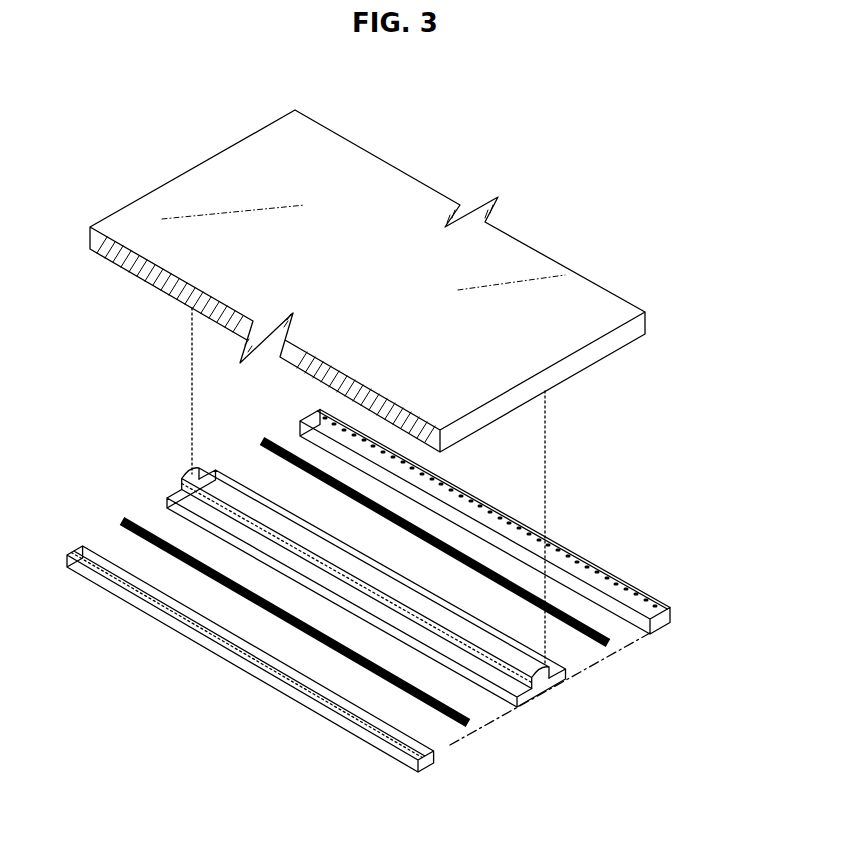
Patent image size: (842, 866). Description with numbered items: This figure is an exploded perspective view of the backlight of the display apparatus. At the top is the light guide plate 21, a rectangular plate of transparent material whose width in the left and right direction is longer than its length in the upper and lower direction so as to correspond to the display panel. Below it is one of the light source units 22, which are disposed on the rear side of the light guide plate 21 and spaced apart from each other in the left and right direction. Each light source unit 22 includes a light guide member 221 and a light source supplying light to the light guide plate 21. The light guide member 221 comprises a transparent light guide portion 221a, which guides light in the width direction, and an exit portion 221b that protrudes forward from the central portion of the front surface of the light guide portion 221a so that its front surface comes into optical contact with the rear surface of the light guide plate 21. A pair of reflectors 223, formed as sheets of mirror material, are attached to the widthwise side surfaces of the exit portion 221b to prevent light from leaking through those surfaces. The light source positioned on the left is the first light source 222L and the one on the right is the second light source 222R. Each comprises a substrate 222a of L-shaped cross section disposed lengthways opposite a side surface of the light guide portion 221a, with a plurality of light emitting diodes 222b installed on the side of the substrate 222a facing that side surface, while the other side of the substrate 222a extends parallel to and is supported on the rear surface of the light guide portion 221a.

The light guide plate 21 is at (424, 182).
The light source unit 22 is at (397, 598).
The light guide member 221 is at (445, 602).
The light guide portion 221a is at (544, 698).
The exit portion 221b is at (536, 664).
The first light source 222L is at (365, 746).
The second light source 222R is at (514, 532).
The substrate 222a is at (656, 630).
The light emitting diode 222b is at (587, 570).
The reflector 223 is at (494, 577).